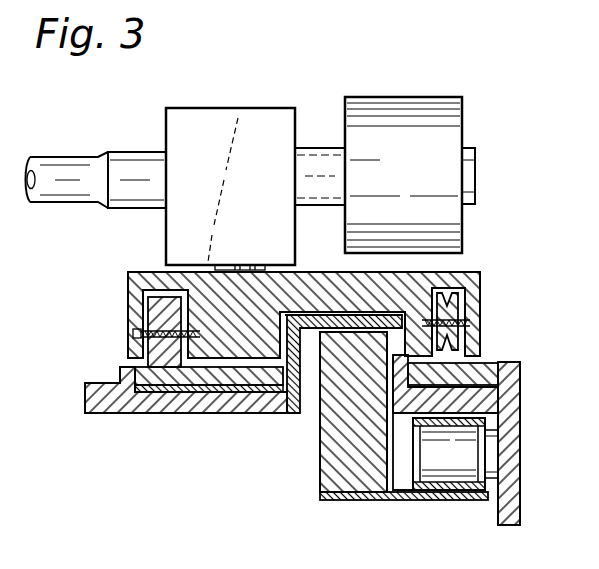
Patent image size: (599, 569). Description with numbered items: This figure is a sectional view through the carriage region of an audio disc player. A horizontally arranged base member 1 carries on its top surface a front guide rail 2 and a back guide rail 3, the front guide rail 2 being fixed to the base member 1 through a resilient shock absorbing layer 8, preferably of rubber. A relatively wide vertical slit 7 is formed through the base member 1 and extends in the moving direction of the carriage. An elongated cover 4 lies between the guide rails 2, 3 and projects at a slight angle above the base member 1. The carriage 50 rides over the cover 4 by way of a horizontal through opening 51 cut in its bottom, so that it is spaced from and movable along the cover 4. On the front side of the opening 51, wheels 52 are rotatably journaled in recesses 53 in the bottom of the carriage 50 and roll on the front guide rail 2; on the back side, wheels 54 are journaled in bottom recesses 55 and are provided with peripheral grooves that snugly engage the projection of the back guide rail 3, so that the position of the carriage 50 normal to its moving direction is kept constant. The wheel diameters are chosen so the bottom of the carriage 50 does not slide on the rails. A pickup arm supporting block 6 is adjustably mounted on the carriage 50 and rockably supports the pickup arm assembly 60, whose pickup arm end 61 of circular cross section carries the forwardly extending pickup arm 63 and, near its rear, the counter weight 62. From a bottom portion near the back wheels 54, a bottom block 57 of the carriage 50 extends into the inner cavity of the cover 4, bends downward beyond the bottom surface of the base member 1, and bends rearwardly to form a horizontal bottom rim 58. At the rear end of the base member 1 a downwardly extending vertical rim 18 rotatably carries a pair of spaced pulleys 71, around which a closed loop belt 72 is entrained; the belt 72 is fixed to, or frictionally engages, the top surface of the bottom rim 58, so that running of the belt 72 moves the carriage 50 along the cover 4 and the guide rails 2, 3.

The base member 1 is at (120, 406).
The front guide rail 2 is at (199, 380).
The back guide rail 3 is at (483, 371).
The elongated cover 4 is at (382, 316).
The pickup arm supporting block 6 is at (256, 118).
The vertical slit 7 is at (306, 402).
The shock absorbing layer 8 is at (247, 394).
The vertical rim 18 is at (510, 492).
The carriage 50 is at (303, 301).
The horizontal through opening 51 is at (313, 314).
The wheels 52 is at (148, 332).
The recesses 53 is at (148, 304).
The wheels 54 is at (465, 322).
The bottom recesses 55 is at (460, 294).
The bottom block 57 is at (349, 496).
The horizontal bottom rim 58 is at (446, 500).
The pickup arm assembly 60 is at (96, 134).
The pickup arm end 61 is at (145, 160).
The counter weight 62 is at (418, 106).
The pickup arm 63 is at (60, 162).
The pulleys 71 is at (489, 475).
The closed loop belt 72 is at (455, 421).